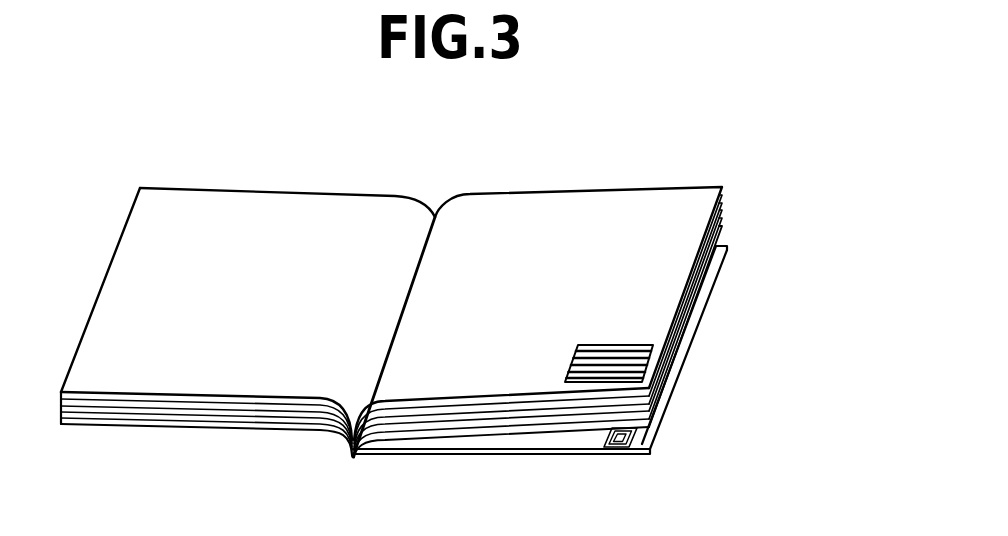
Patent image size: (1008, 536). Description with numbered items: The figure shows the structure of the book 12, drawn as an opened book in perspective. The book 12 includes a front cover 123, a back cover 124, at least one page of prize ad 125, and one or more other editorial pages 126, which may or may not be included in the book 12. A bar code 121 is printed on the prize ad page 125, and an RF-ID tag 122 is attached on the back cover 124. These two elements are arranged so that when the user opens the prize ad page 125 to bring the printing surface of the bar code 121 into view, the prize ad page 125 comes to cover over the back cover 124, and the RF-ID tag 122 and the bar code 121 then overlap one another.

The book 12 is at (337, 181).
The bar code 121 is at (578, 360).
The RF-ID tag 122 is at (640, 440).
The front cover 123 is at (196, 426).
The back cover 124 is at (673, 387).
The prize ad page 125 is at (720, 184).
The other editorial pages 126 is at (731, 190).